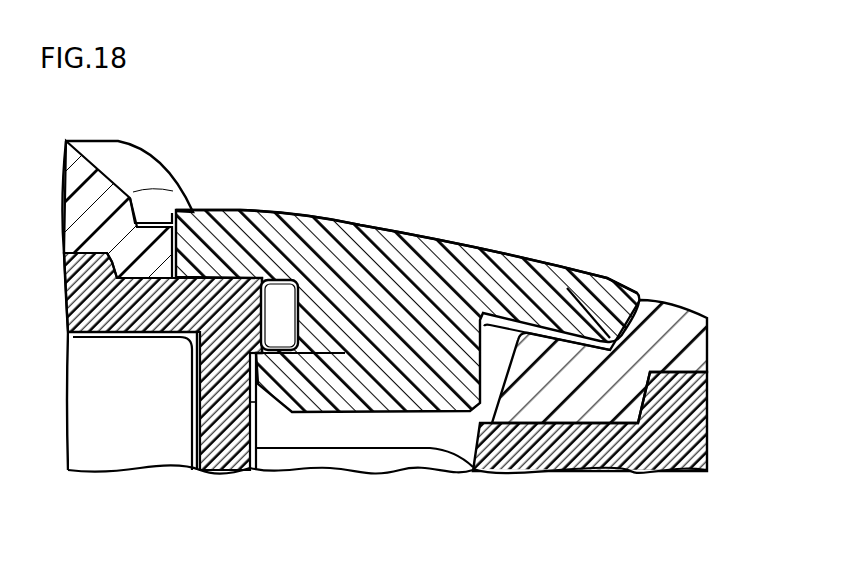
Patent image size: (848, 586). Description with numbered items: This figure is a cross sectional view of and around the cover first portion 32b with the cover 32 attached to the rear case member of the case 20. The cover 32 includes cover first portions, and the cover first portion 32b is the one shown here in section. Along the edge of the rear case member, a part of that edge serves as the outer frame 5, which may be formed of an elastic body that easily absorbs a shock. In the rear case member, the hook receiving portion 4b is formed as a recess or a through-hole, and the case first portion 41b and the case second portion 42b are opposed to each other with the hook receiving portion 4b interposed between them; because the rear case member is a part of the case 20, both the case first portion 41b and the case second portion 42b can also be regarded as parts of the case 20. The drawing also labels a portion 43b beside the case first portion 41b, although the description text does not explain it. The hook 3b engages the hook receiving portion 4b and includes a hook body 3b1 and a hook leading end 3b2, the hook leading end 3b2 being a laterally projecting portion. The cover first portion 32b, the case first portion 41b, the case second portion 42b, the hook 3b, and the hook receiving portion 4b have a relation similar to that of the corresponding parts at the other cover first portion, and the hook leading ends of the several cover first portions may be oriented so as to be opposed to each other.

The case 20 is at (149, 139).
The case first portion 41b is at (195, 303).
The engaging recess 43b is at (262, 320).
The cover 32 is at (484, 239).
The cover first portion 32b is at (400, 260).
The case second portion 42b is at (552, 372).
The outer frame 5 is at (667, 330).
The hook 3b is at (353, 512).
The hook body 3b1 is at (345, 318).
The hook leading end 3b2 is at (277, 388).
The hook receiving portion 4b is at (400, 440).